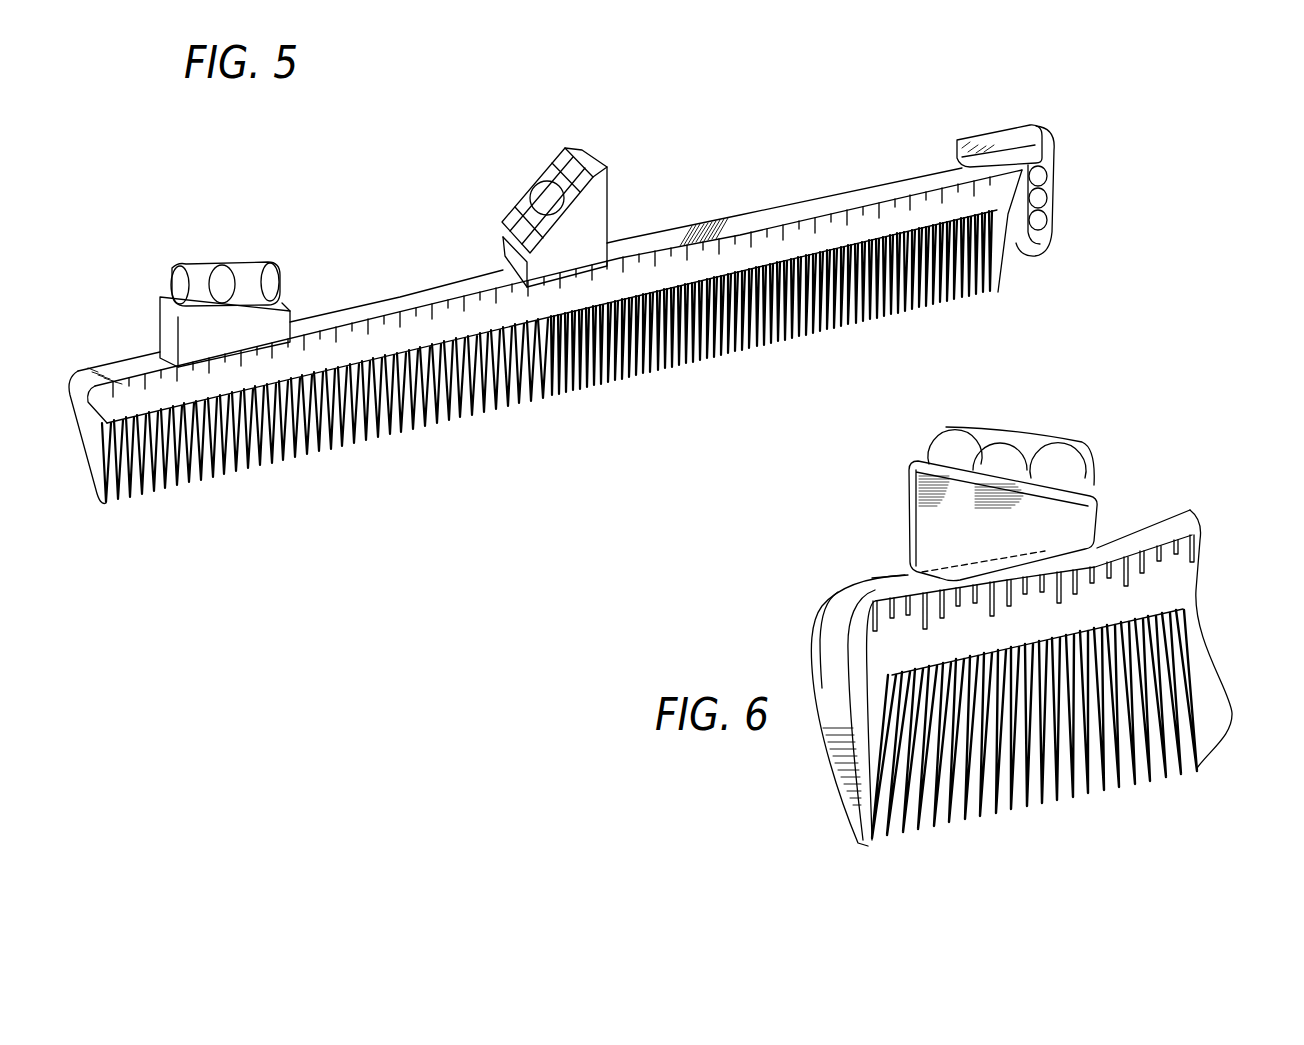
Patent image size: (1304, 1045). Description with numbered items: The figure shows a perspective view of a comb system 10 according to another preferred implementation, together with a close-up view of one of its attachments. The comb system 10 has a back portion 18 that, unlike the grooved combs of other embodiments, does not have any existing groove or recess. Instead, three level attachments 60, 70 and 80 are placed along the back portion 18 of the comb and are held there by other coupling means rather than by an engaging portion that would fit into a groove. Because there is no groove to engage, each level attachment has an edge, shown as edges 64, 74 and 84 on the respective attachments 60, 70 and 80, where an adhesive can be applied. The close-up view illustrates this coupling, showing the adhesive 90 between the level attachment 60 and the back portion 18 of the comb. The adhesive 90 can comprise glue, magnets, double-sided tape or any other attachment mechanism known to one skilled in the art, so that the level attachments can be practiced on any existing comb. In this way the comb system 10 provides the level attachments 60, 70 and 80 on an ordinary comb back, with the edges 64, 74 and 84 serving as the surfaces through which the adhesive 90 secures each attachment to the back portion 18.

In FIG. 5, the comb system 10 is at (344, 156).
In FIG. 6, the comb system 10 is at (833, 442).
In FIG. 5, the back portion 18 is at (778, 208).
In FIG. 6, the back portion 18 is at (1147, 525).
In FIG. 5, the level attachment 60 is at (198, 250).
In FIG. 6, the level attachment 60 is at (897, 495).
In FIG. 5, the edge 64 is at (165, 360).
In FIG. 5, the level attachment 70 is at (546, 152).
In FIG. 5, the edge 74 is at (506, 278).
In FIG. 5, the level attachment 80 is at (970, 122).
In FIG. 5, the edge 84 is at (1015, 236).
In FIG. 6, the adhesive 90 is at (1005, 557).